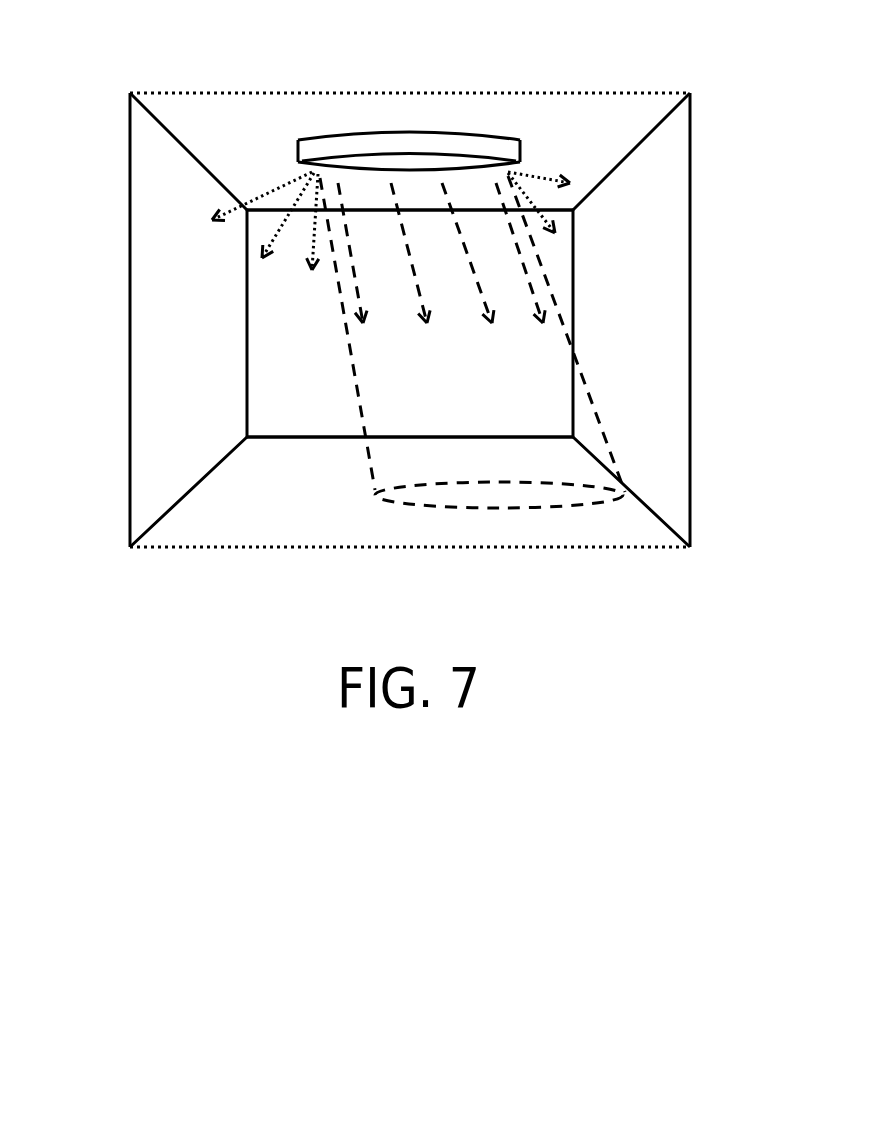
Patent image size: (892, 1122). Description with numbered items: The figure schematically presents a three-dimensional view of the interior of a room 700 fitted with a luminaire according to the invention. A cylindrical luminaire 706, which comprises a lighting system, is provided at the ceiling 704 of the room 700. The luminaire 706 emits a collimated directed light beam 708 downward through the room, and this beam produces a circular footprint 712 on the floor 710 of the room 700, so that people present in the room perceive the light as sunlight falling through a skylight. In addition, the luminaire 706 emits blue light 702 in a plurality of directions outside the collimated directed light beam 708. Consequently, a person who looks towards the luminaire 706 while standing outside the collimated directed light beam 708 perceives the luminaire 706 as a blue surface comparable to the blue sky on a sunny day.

The room 700 is at (228, 520).
The blue light 702 is at (210, 214).
The ceiling 704 is at (239, 127).
The cylindrical luminaire 706 is at (404, 140).
The collimated directed light beam 708 is at (507, 272).
The floor 710 is at (317, 507).
The circular footprint 712 is at (498, 495).